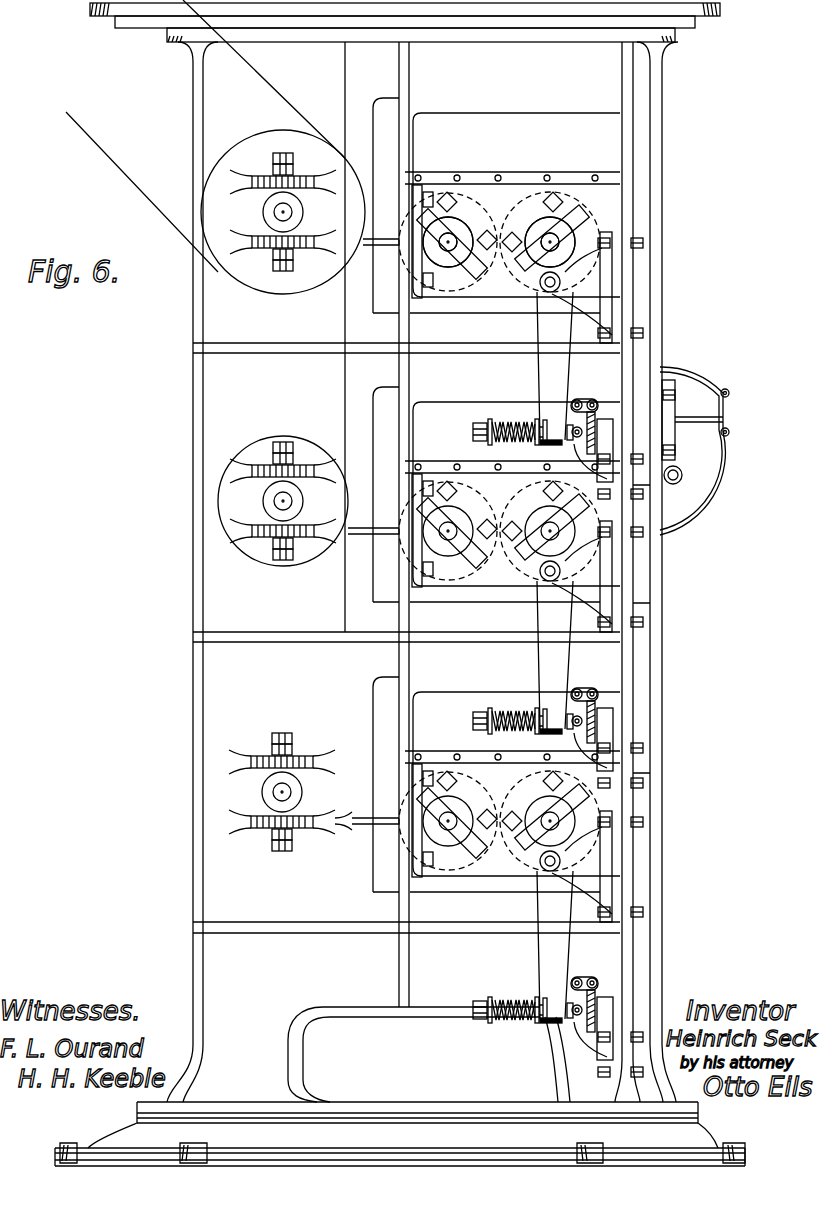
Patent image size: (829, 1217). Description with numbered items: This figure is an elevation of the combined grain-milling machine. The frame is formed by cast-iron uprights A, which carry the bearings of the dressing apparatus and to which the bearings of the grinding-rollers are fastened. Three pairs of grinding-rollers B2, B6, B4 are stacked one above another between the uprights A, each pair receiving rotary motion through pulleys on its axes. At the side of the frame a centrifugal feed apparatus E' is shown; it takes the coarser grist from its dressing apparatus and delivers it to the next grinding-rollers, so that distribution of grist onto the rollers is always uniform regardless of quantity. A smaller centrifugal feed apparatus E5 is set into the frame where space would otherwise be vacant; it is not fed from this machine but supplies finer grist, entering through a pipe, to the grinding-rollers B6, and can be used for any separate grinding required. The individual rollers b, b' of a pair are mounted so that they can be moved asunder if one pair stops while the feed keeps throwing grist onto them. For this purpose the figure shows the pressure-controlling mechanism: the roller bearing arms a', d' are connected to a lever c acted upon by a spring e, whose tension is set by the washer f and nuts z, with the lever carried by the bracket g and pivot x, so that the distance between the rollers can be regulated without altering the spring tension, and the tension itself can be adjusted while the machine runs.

The upright A is at (400, 584).
The centrifugal feed apparatus E' is at (215, 147).
The grinding-rollers B2 is at (508, 220).
The grinding-rollers B6 is at (508, 509).
The grinding-rollers B4 is at (508, 799).
The roller b is at (457, 205).
The roller b' is at (548, 198).
The arm a' is at (582, 291).
The arm d' is at (582, 725).
The lever c is at (555, 655).
The spring e is at (512, 444).
The flange washer f is at (490, 445).
The bracket g is at (582, 757).
The pivot plate x is at (597, 410).
The adjusting nut z is at (486, 1000).
The centrifugal feed apparatus E5 is at (678, 477).